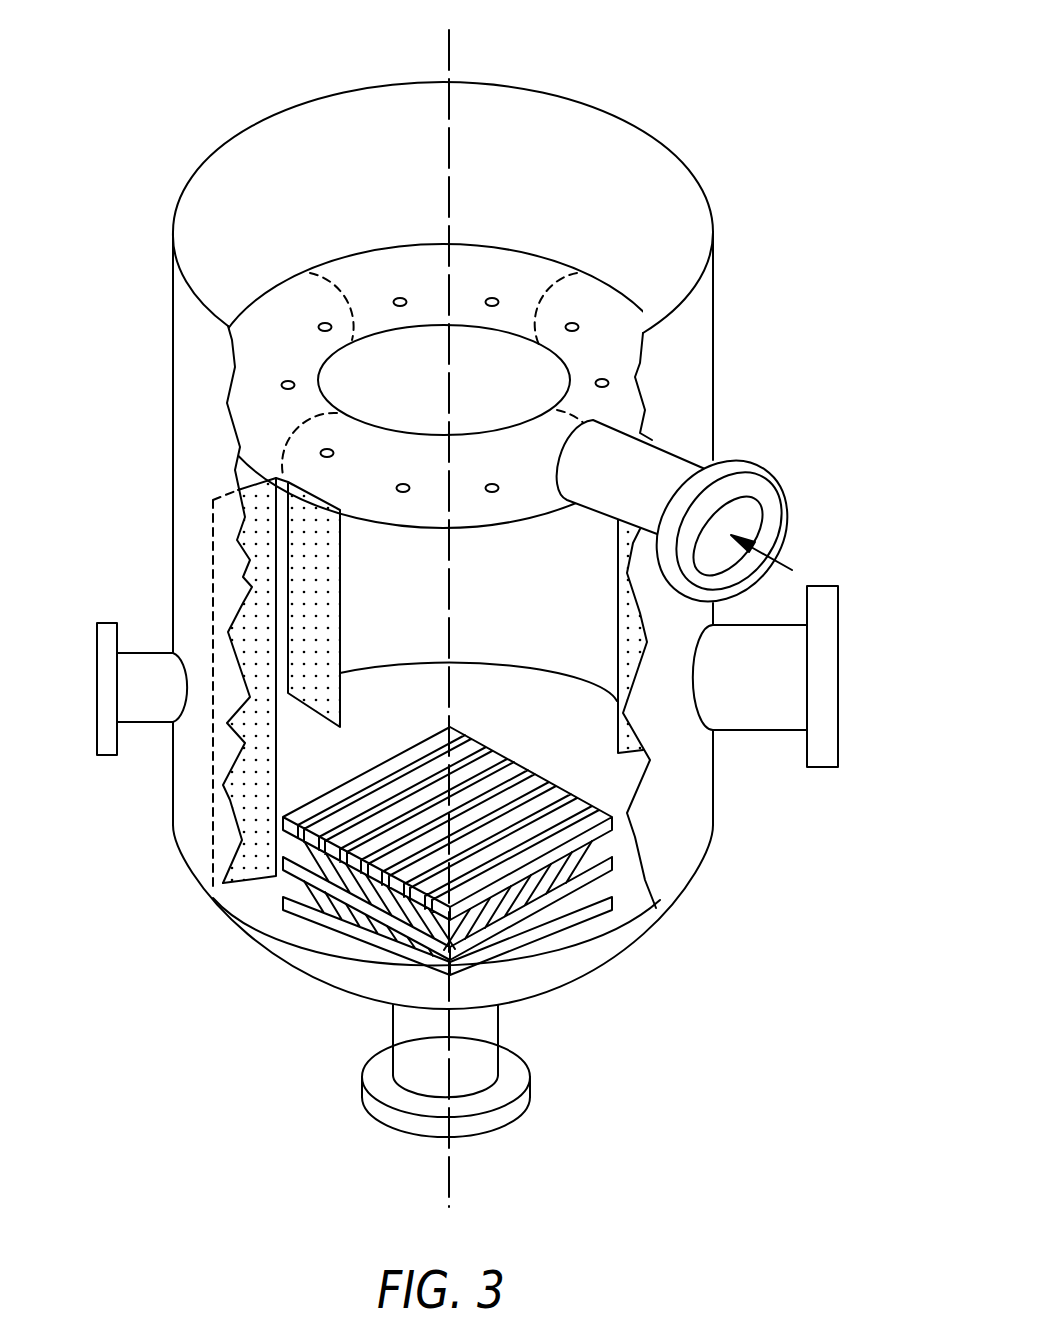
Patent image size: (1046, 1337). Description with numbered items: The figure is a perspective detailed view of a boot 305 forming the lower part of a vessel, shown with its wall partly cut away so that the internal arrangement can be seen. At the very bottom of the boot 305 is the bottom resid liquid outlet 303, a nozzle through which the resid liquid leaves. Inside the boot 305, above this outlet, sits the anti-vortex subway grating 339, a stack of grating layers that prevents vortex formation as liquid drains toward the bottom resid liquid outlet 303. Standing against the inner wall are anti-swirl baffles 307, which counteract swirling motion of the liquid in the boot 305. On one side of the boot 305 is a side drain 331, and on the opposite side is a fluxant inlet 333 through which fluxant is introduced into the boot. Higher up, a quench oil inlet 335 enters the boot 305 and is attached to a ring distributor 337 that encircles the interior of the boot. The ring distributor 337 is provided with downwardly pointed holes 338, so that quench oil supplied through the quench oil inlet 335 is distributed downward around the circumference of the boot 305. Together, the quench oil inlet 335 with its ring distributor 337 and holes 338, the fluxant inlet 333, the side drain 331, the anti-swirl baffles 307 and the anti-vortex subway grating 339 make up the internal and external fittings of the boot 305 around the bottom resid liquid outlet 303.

The bottom resid liquid outlet 303 is at (512, 1065).
The boot 305 is at (683, 73).
The anti-swirl baffles 307 is at (256, 618).
The side drain 331 is at (142, 723).
The fluxant inlet 333 is at (765, 728).
The quench oil inlet 335 is at (750, 462).
The ring distributor 337 is at (620, 312).
The downwardly pointed holes 338 is at (405, 307).
The anti-vortex subway grating 339 is at (320, 918).